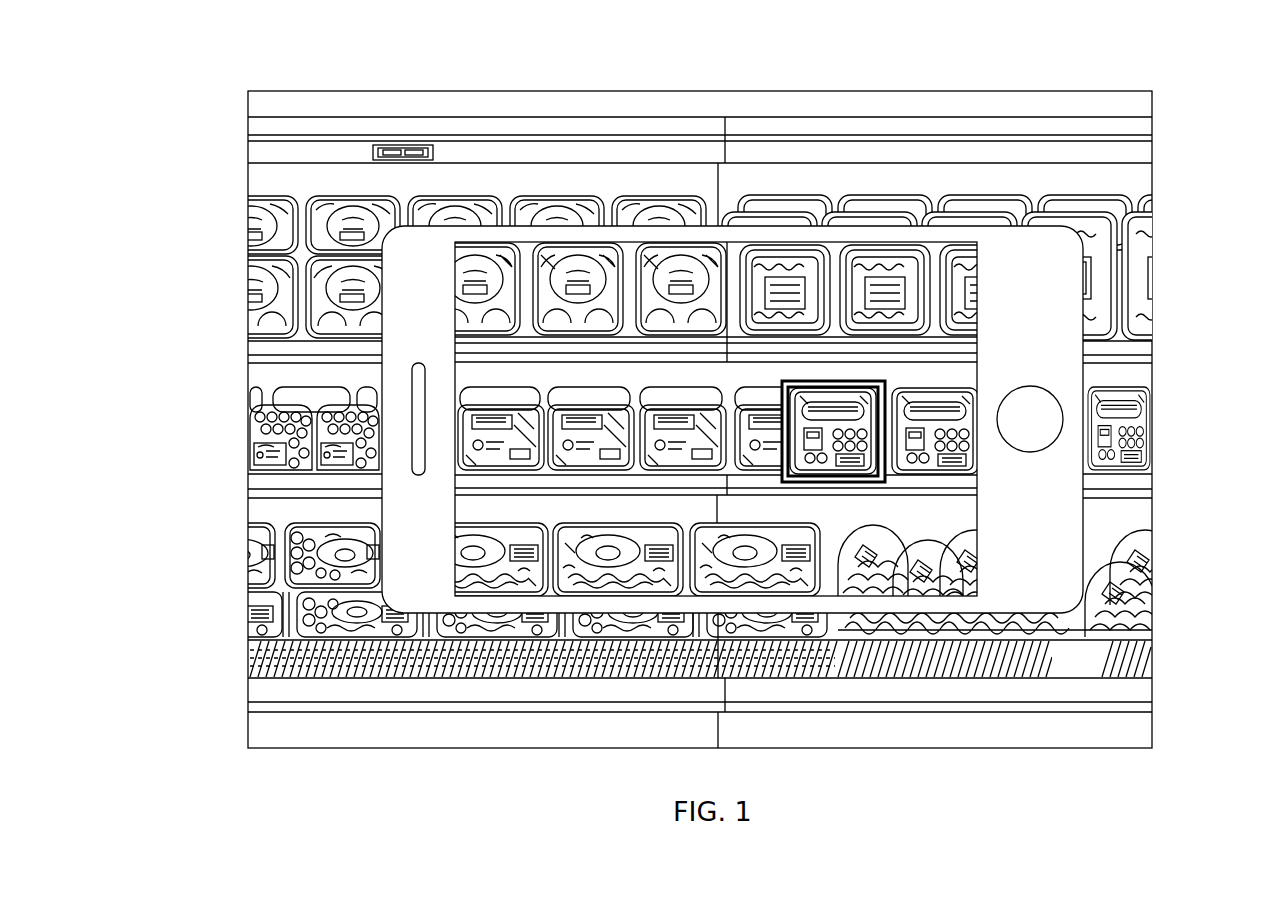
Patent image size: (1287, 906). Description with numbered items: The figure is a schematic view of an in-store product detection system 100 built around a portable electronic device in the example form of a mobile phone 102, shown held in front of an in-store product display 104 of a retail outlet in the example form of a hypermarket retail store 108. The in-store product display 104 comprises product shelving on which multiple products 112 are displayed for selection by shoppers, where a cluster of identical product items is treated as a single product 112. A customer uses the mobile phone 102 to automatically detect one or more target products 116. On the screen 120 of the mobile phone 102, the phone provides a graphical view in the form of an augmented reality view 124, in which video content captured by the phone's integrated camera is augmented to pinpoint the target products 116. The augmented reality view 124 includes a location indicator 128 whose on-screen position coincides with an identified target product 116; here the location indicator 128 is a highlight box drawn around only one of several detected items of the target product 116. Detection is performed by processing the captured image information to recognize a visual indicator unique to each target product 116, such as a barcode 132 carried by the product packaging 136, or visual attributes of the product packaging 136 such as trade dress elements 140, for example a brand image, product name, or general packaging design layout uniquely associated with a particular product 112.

The in-store product detection system 100 is at (1057, 132).
The mobile phone 102 is at (1087, 367).
The in-store product display 104 is at (340, 177).
The hypermarket retail store 108 is at (288, 78).
The products 112 is at (307, 312).
The target products 116 is at (1088, 661).
The screen 120 is at (529, 383).
The augmented reality view 124 is at (755, 222).
The location indicator 128 is at (876, 487).
The barcode 132 is at (952, 480).
The product packaging 136 is at (323, 661).
The trade dress elements 140 is at (323, 670).